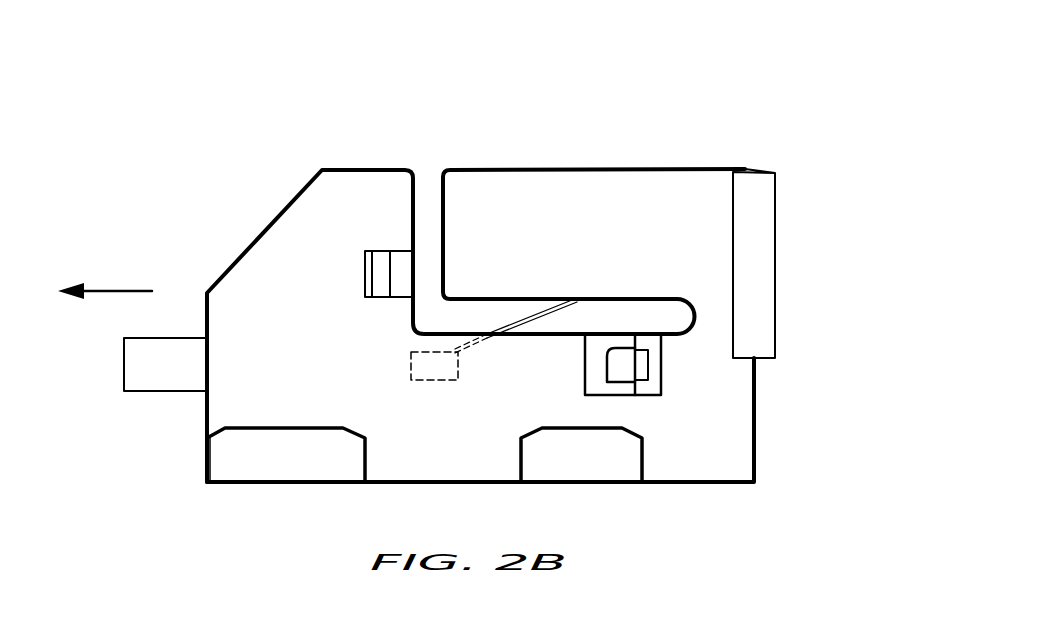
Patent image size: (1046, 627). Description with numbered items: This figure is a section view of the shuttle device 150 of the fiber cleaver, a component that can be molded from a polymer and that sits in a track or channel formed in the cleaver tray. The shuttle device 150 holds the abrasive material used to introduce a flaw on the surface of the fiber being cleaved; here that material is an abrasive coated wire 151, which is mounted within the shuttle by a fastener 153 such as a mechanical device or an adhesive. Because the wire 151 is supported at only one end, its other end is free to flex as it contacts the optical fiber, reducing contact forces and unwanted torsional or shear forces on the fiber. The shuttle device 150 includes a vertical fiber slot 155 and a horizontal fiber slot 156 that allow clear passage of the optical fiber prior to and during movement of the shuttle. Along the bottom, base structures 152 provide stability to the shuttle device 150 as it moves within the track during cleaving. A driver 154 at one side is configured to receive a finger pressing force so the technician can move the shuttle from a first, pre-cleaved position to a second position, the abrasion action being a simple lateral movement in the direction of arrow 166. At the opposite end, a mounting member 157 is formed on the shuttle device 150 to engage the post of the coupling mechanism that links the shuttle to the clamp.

The shuttle device 150 is at (387, 141).
The abrasive coated wire 151 is at (530, 315).
The base structures 152 is at (248, 468).
The fastener 153 is at (431, 380).
The driver 154 is at (765, 236).
The vertical fiber slot 155 is at (428, 202).
The horizontal fiber slot 156 is at (648, 318).
The mounting member 157 is at (143, 375).
The arrow 166 is at (118, 291).